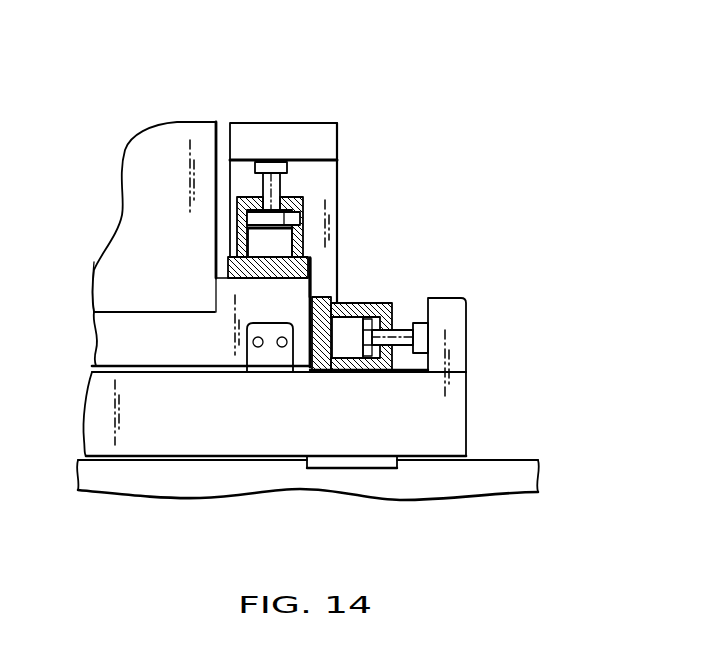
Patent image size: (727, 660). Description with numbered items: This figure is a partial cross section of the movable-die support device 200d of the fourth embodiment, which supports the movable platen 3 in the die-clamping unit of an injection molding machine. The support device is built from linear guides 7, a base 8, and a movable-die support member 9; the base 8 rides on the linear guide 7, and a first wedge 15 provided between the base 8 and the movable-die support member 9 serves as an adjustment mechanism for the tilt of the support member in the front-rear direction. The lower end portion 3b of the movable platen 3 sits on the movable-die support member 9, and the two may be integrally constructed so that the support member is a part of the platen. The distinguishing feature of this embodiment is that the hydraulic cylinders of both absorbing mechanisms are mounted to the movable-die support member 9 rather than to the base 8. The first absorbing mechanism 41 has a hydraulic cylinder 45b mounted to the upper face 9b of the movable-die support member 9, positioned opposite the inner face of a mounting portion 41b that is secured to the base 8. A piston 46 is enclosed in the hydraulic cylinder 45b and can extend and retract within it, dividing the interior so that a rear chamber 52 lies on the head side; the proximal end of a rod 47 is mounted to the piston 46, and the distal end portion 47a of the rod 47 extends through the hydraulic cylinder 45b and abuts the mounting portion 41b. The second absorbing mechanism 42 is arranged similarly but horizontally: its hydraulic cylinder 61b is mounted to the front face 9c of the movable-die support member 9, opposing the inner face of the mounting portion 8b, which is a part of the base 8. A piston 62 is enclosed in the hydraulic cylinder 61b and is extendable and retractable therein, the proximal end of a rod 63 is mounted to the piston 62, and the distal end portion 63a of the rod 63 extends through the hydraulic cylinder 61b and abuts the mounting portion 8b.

The movable-die support device 200d is at (465, 82).
The movable platen 3 is at (133, 205).
The lower end portion of the movable platen 3b is at (103, 265).
The linear guide 7 is at (514, 460).
The base 8 is at (421, 440).
The mounting portion 8b is at (447, 310).
The movable-die support member 9 is at (103, 340).
The upper face of the movable-die support member 9b is at (241, 283).
The front face of the movable-die support member 9c is at (313, 289).
The first wedge 15 is at (270, 358).
The first absorbing mechanism 41 is at (238, 184).
The mounting portion 41b is at (247, 131).
The second absorbing mechanism 42 is at (415, 390).
The hydraulic cylinder 45b is at (304, 204).
The piston 46 is at (282, 218).
The rod 47 is at (272, 182).
The distal end portion of the rod 47a is at (274, 165).
The rear chamber 52 is at (263, 243).
The hydraulic cylinder 61b is at (322, 372).
The piston 62 is at (368, 372).
The rod 63 is at (405, 333).
The distal end portion of the rod 63a is at (422, 333).